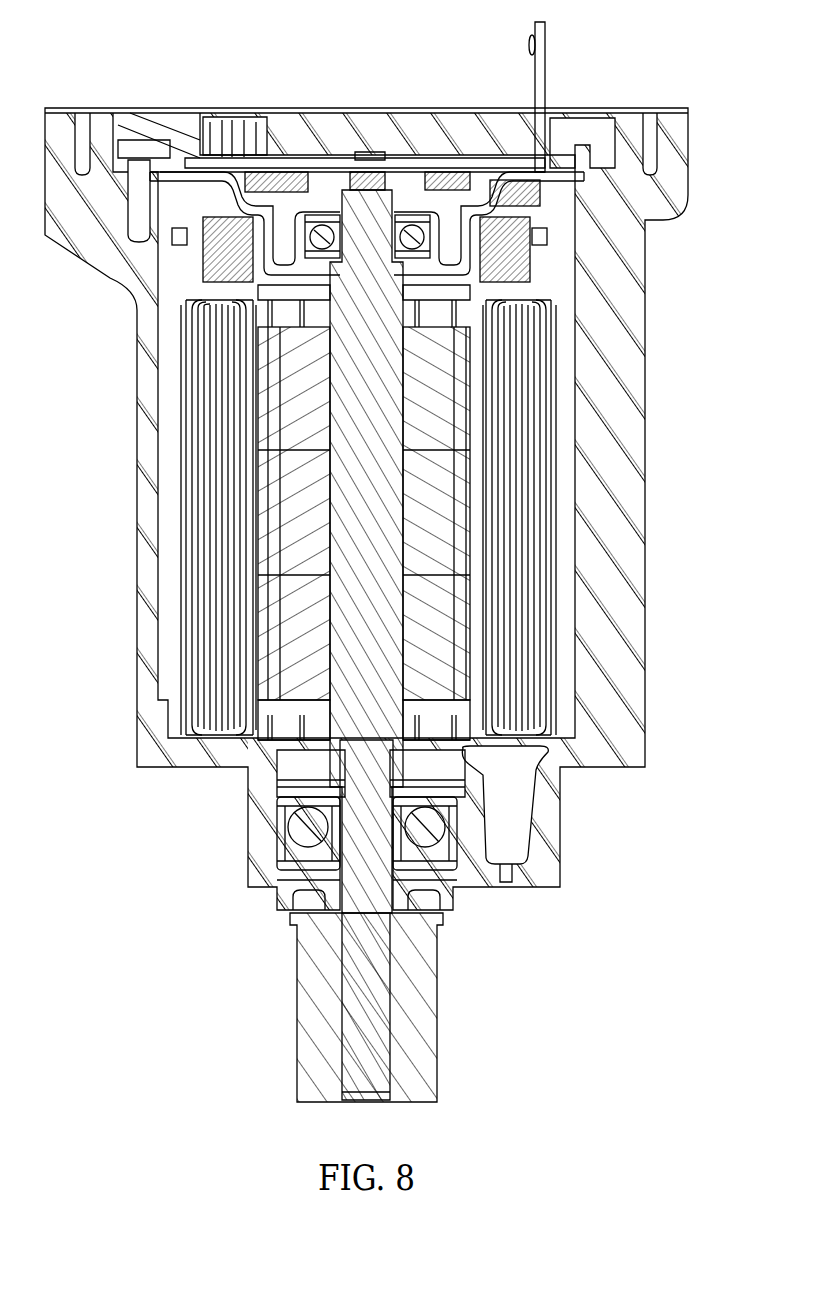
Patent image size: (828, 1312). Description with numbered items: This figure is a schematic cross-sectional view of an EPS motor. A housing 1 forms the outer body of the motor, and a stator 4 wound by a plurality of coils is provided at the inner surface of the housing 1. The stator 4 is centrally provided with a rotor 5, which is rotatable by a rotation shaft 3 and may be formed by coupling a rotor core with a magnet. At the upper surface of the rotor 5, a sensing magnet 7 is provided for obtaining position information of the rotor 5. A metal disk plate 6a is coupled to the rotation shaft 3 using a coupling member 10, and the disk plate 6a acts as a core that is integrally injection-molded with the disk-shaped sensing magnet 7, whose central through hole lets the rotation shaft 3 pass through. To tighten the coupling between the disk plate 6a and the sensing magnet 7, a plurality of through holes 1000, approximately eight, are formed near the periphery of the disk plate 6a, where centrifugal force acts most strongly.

The housing 1 is at (630, 443).
The rotation shaft 3 is at (378, 978).
The stator 4 is at (200, 612).
The rotor 5 is at (300, 698).
The disk plate 6a is at (450, 172).
The sensing magnet 7 is at (487, 172).
The coupling member 10 is at (366, 152).
The through holes 1000 is at (300, 180).